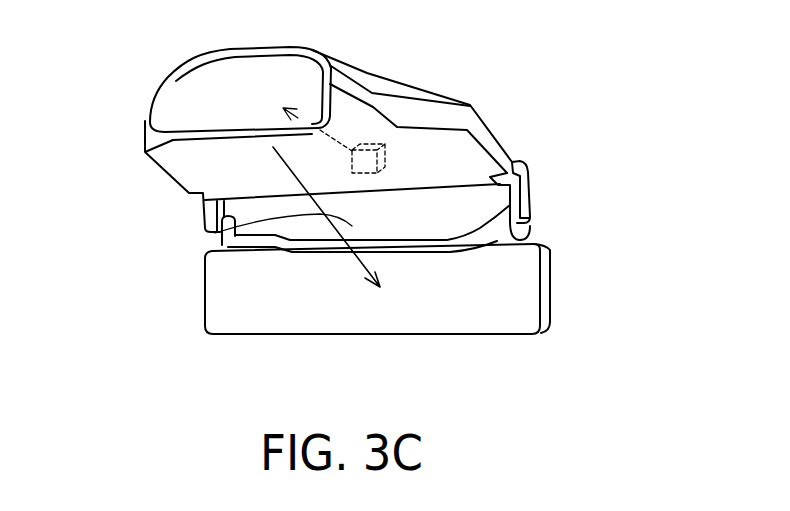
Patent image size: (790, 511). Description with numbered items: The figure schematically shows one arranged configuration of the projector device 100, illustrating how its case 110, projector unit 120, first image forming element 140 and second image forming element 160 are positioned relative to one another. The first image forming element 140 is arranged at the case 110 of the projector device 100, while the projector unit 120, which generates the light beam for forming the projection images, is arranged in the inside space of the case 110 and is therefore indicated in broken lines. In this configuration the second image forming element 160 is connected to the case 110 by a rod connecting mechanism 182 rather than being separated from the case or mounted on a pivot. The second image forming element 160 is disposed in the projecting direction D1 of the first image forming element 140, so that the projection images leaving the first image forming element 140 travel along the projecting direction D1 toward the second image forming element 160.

The projector device 100 is at (693, 377).
The case 110 is at (480, 128).
The projector unit 120 is at (365, 148).
The first image forming element 140 is at (192, 92).
The second image forming element 160 is at (223, 298).
The rod connecting mechanism 182 is at (518, 200).
The projecting direction D1 is at (215, 233).